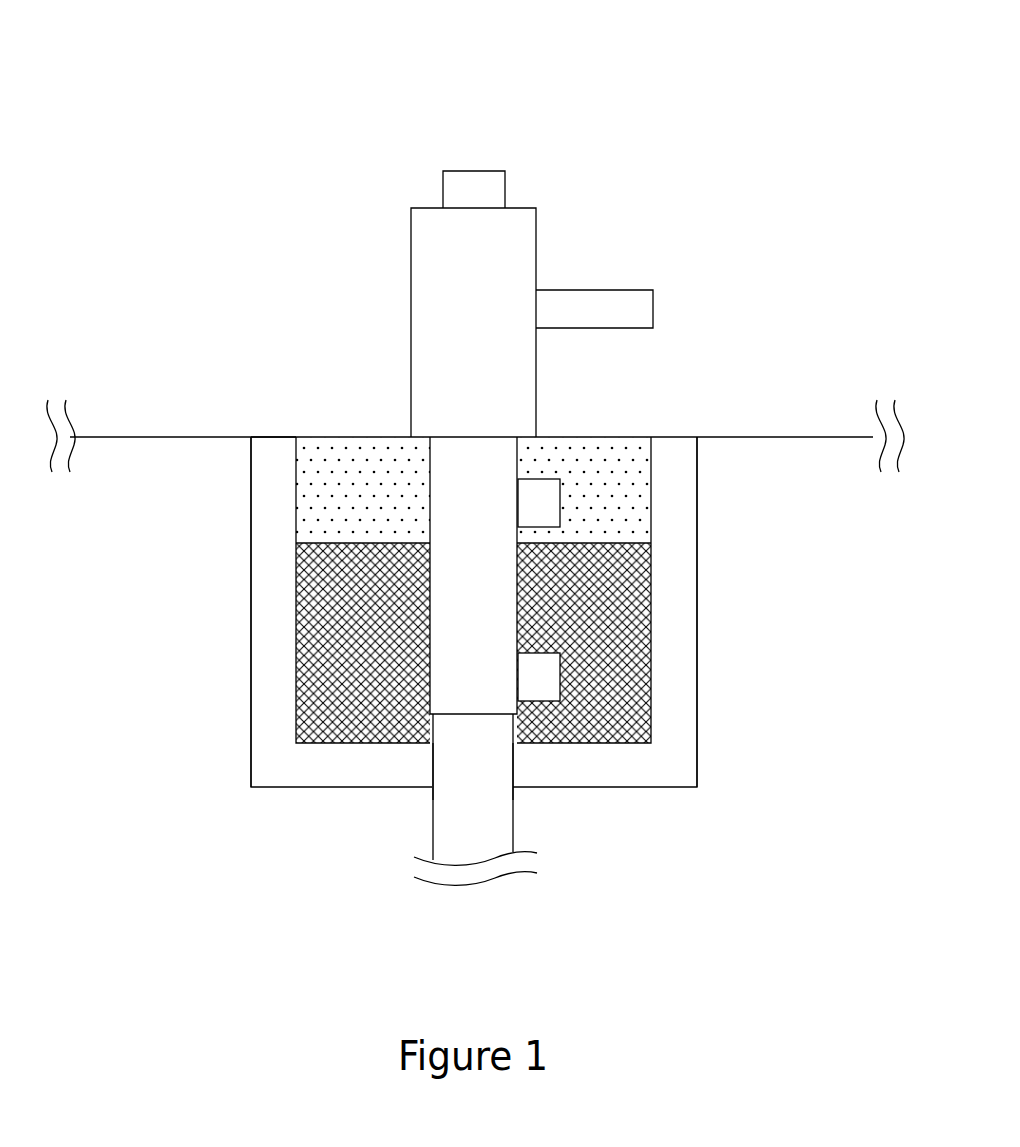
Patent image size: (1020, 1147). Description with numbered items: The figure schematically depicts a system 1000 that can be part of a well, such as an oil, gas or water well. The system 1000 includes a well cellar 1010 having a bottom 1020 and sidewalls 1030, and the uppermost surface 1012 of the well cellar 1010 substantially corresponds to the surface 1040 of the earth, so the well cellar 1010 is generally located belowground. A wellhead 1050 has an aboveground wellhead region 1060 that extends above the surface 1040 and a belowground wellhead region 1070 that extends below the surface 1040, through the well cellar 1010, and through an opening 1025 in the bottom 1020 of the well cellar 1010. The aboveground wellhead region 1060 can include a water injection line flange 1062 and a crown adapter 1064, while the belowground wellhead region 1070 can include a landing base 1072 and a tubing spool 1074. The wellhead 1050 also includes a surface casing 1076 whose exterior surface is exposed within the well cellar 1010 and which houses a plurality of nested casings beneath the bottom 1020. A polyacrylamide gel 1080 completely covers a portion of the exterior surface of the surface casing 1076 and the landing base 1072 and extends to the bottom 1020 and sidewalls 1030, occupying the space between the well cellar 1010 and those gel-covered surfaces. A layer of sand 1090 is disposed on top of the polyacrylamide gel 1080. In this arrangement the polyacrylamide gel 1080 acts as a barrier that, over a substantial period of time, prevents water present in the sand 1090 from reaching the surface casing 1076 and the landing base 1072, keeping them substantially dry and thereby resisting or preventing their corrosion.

The system 1000 is at (146, 78).
The well cellar 1010 is at (210, 519).
The uppermost surface of the well cellar 1012 is at (272, 437).
The bottom of the well cellar 1020 is at (311, 770).
The opening in the bottom of the well cellar 1025 is at (432, 790).
The sidewalls of the well cellar 1030 is at (265, 587).
The surface of the earth 1040 is at (757, 437).
The wellhead 1050 is at (352, 309).
The aboveground wellhead region 1060 is at (411, 253).
The water injection line flange 1062 is at (592, 290).
The crown adapter 1064 is at (474, 170).
The belowground wellhead region 1070 is at (420, 645).
The landing base 1072 is at (560, 668).
The tubing spool 1074 is at (560, 500).
The surface casing 1076 is at (513, 818).
The polyacrylamide gel 1080 is at (340, 695).
The layer of sand 1090 is at (595, 450).